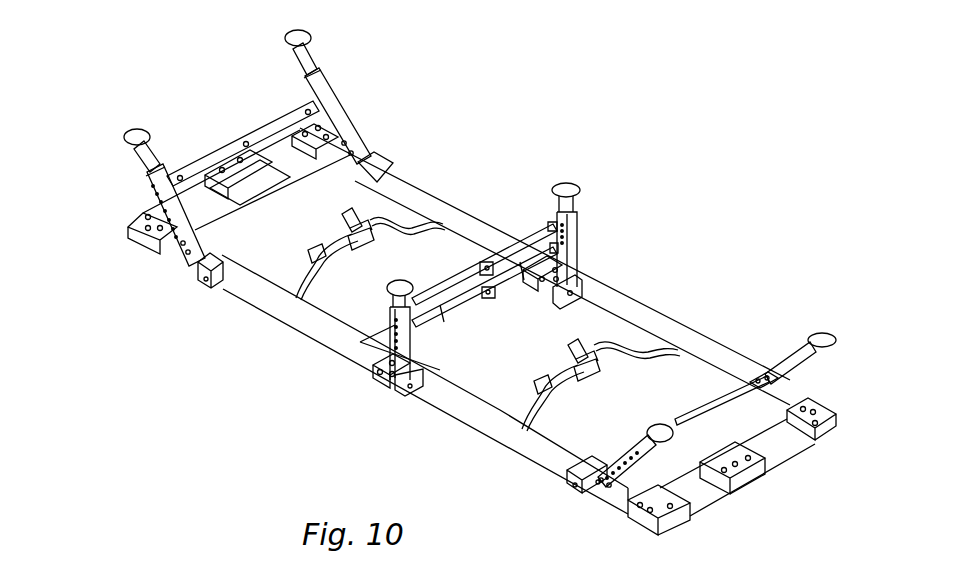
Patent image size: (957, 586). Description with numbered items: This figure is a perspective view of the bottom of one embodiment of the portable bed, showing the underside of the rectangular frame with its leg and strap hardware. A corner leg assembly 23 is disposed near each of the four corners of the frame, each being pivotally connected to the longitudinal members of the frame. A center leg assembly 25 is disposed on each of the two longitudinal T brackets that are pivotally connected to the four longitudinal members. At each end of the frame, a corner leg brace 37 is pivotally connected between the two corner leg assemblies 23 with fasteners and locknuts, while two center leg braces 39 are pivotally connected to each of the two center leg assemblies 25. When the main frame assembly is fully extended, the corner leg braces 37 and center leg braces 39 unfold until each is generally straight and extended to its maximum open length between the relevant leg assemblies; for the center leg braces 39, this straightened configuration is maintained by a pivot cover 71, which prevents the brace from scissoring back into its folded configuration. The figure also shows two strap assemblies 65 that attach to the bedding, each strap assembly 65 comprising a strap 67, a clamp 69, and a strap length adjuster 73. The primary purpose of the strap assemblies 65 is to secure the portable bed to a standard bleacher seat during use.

The corner leg assembly 23 is at (328, 95).
The center leg assembly 25 is at (580, 242).
The corner leg brace 37 is at (210, 150).
The center leg brace 39 is at (368, 375).
The strap assembly 65 is at (360, 194).
The strap 67 is at (352, 262).
The clamp 69 is at (357, 270).
The pivot cover 71 is at (488, 290).
The strap length adjuster 73 is at (226, 282).